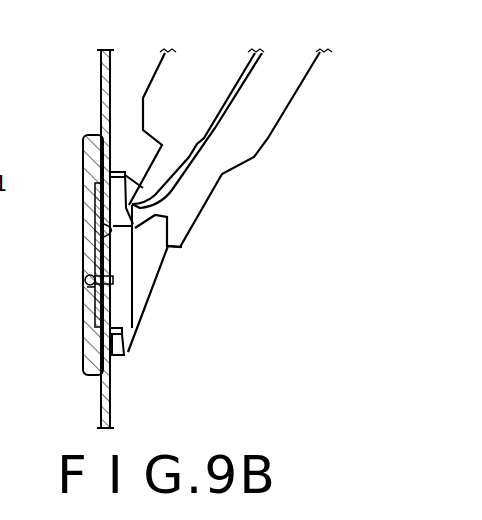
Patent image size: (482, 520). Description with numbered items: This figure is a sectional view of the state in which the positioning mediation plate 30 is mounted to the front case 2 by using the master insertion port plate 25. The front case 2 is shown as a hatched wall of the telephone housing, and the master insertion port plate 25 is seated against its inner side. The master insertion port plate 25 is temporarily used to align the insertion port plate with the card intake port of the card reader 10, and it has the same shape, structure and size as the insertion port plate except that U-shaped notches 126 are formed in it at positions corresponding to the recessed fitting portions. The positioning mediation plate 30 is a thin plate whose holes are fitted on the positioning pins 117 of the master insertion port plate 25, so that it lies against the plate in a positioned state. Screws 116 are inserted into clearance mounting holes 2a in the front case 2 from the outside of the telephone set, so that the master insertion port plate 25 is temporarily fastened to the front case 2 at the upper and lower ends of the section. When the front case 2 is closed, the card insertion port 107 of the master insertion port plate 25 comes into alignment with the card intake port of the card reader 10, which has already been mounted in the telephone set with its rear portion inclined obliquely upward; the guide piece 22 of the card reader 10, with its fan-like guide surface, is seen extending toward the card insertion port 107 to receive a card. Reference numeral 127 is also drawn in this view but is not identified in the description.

The front case 2 is at (101, 82).
The clearance mounting holes 2a is at (101, 133).
The card reader 10 is at (271, 140).
The guide piece 22 is at (176, 194).
The master insertion port plate 25 is at (78, 163).
The positioning mediation plate 30 is at (95, 206).
The card insertion port 107 is at (138, 216).
The screws 116 is at (120, 172).
The positioning pins 117 is at (113, 235).
The U-shaped notches 126 is at (87, 287).
The pin 127 is at (87, 280).